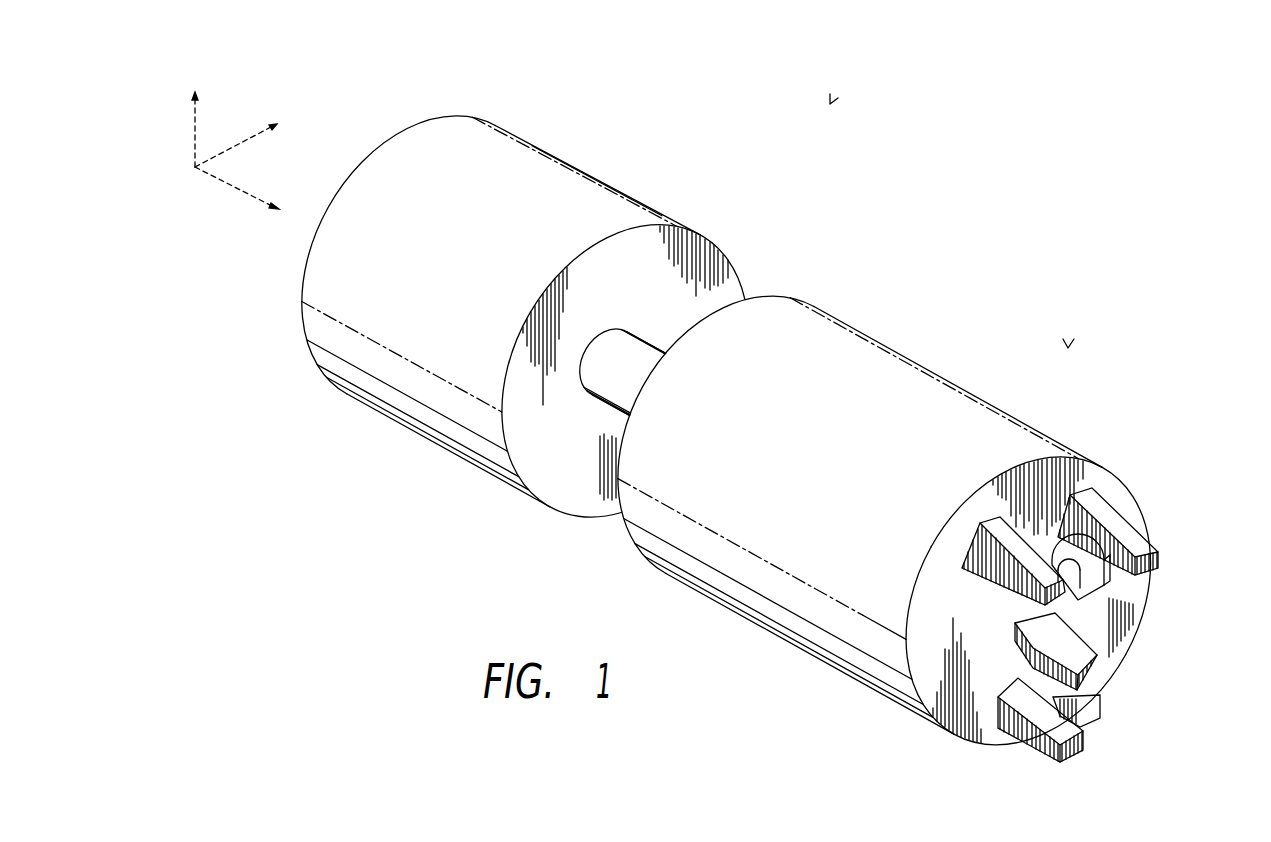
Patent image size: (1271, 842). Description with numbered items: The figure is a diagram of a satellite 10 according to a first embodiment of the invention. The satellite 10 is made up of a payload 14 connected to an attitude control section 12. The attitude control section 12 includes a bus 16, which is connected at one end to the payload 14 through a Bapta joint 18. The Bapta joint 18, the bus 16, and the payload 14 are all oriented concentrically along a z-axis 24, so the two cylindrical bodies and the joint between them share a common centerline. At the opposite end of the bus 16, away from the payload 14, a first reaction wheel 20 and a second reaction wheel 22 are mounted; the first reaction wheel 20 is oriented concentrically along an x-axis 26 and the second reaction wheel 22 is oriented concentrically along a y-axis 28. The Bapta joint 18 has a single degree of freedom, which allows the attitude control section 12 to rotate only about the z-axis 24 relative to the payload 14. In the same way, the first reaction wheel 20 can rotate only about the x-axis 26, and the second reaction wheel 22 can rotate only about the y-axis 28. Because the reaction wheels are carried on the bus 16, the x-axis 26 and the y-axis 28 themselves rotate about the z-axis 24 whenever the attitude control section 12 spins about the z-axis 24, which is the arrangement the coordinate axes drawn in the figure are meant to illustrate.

The satellite 10 is at (762, 399).
The attitude control section 12 is at (920, 515).
The payload 14 is at (557, 170).
The bus 16 is at (915, 370).
The Bapta joint 18 is at (632, 367).
The first reaction wheel 20 is at (1090, 545).
The second reaction wheel 22 is at (1085, 707).
The z-axis 24 is at (235, 188).
The x-axis 26 is at (237, 147).
The y-axis 28 is at (194, 128).